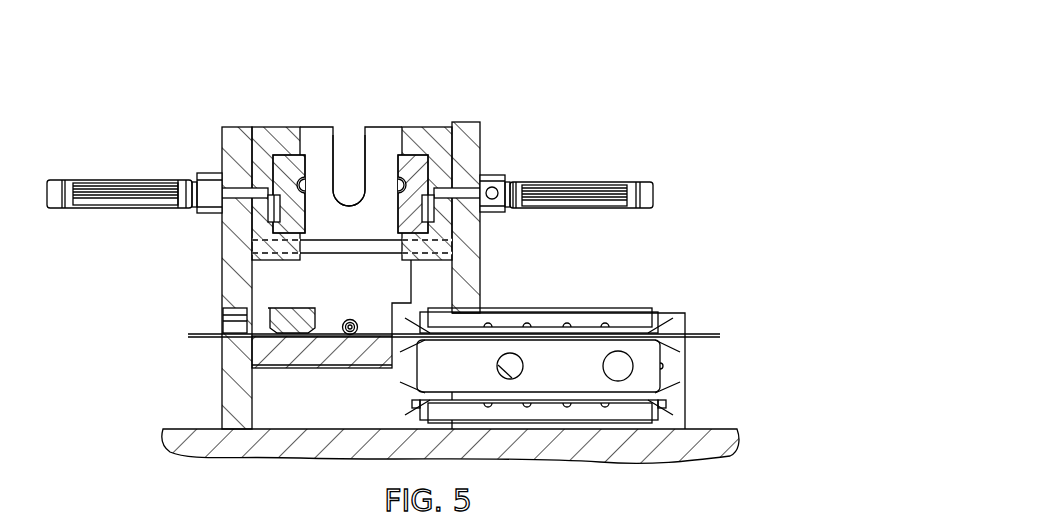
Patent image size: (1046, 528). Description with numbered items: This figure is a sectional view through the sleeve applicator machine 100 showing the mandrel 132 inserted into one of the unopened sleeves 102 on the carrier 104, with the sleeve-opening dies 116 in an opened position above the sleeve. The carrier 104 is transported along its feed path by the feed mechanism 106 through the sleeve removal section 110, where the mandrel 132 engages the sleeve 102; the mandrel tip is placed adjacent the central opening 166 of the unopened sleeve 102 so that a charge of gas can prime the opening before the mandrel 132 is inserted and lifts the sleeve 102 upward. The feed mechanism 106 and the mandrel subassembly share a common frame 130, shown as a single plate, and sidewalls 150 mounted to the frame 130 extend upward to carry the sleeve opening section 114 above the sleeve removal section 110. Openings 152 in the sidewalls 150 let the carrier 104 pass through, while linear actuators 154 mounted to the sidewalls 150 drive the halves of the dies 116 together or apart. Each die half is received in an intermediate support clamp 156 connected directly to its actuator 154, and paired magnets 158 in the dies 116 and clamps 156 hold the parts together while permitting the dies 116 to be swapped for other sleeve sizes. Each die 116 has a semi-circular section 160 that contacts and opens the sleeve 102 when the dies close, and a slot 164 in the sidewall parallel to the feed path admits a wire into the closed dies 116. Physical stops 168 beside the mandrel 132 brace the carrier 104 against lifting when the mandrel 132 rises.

The sleeve applicator machine 100 is at (582, 72).
The sleeve 102 is at (360, 325).
The carrier 104 is at (207, 340).
The feed mechanism 106 is at (622, 286).
The sleeve removal section 110 is at (314, 291).
The sleeve opening section 114 is at (310, 110).
The sleeve-opening dies 116 is at (410, 207).
The frame 130 is at (687, 445).
The mandrel 132 is at (362, 340).
The sidewalls 150 is at (222, 152).
The openings 152 is at (233, 322).
The linear actuators 154 is at (128, 190).
The support clamps 156 is at (278, 128).
The magnets 158 is at (266, 209).
The semi-circular section 160 is at (402, 185).
The slot 164 is at (365, 137).
The central opening 166 is at (347, 322).
The physical stops 168 is at (277, 315).